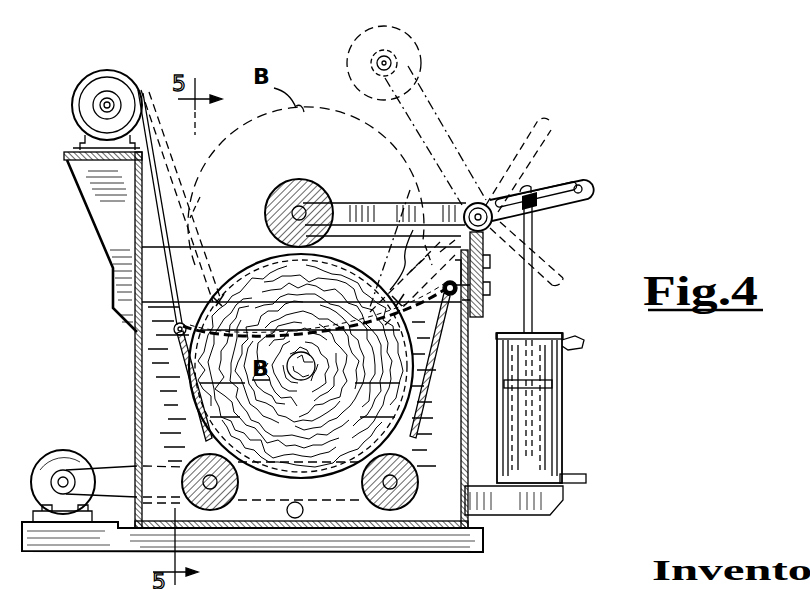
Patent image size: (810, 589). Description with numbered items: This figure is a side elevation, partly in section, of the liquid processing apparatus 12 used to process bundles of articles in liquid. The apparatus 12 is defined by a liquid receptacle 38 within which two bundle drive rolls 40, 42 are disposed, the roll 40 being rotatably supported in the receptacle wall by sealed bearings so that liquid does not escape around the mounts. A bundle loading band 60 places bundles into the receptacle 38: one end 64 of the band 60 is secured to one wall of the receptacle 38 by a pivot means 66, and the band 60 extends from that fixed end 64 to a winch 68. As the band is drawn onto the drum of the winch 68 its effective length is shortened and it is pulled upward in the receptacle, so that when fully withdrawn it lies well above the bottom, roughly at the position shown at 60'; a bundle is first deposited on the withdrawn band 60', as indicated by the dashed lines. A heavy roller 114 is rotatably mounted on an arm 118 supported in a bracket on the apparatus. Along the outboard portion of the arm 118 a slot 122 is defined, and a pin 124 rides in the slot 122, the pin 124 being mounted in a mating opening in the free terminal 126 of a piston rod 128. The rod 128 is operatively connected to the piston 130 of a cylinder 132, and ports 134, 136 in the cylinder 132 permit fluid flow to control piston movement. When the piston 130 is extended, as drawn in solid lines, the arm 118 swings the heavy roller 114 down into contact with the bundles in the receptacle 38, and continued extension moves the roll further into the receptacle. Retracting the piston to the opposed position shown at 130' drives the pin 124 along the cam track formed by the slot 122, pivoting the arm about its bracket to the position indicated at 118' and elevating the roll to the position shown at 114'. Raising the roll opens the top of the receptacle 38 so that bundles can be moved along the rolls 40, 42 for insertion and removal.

The liquid processing apparatus 12 is at (632, 205).
The liquid receptacle 38 is at (135, 372).
The bundle drive roll 40 is at (237, 505).
The bundle drive roll 42 is at (447, 447).
The bundle loading band 60 is at (256, 212).
The withdrawn band position 60' is at (310, 186).
The band end 64 is at (423, 412).
The pivot means 66 is at (457, 289).
The winch 68 is at (85, 88).
The heavy roller 114 is at (299, 189).
The elevated roll position 114' is at (423, 63).
The arm 118 is at (384, 198).
The raised arm position 118' is at (447, 134).
The slot 122 is at (590, 186).
The pin 124 is at (540, 188).
The free terminal 126 is at (560, 198).
The piston rod 128 is at (535, 314).
The piston 130 is at (565, 395).
The retracted piston position 130' is at (514, 514).
The cylinder 132 is at (562, 437).
The port 134 is at (562, 345).
The port 136 is at (586, 479).